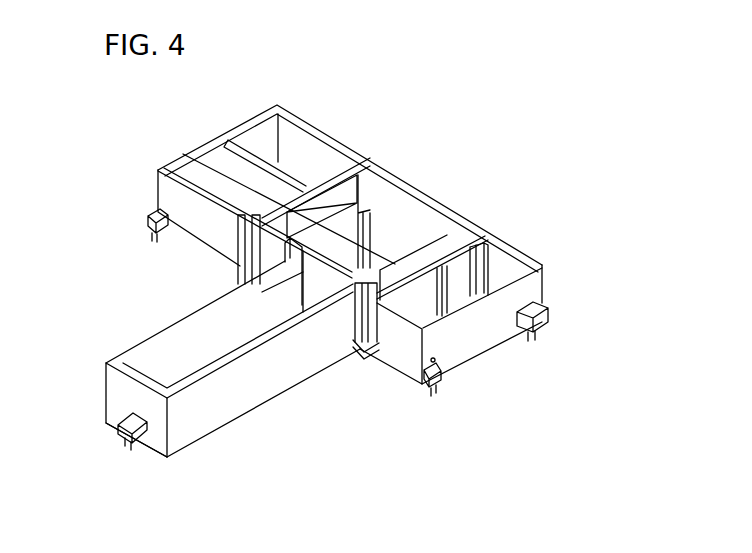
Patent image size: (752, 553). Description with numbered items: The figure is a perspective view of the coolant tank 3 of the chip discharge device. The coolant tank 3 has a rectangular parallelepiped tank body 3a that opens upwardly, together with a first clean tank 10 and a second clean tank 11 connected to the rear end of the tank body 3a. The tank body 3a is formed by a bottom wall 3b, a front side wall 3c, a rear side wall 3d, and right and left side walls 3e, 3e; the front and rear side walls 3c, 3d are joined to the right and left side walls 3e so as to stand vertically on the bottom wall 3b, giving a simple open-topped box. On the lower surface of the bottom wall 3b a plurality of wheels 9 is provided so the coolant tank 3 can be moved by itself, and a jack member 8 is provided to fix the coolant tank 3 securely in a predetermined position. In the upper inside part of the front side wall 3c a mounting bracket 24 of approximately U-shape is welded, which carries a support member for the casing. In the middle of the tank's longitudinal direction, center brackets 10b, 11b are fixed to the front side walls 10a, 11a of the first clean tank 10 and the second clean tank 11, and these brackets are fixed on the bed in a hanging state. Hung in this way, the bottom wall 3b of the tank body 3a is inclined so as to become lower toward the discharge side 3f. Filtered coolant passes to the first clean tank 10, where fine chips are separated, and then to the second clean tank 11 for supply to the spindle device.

The coolant tank 3 is at (331, 88).
The second clean tank 11 is at (336, 130).
The front side wall of the second clean tank 11a is at (203, 231).
The center bracket 11b is at (242, 279).
The tank body 3a is at (156, 328).
The mounting bracket 24 is at (140, 381).
The right and left side walls 3e is at (190, 422).
The front side wall 3c is at (153, 433).
The bottom wall 3b is at (245, 348).
The discharge side 3f is at (392, 268).
The rear side wall 3d is at (473, 220).
The first clean tank 10 is at (497, 355).
The front side wall of the first clean tank 10a is at (403, 350).
The center bracket 10b is at (350, 328).
The jack member 8 is at (147, 216).
The wheels 9 is at (118, 432).